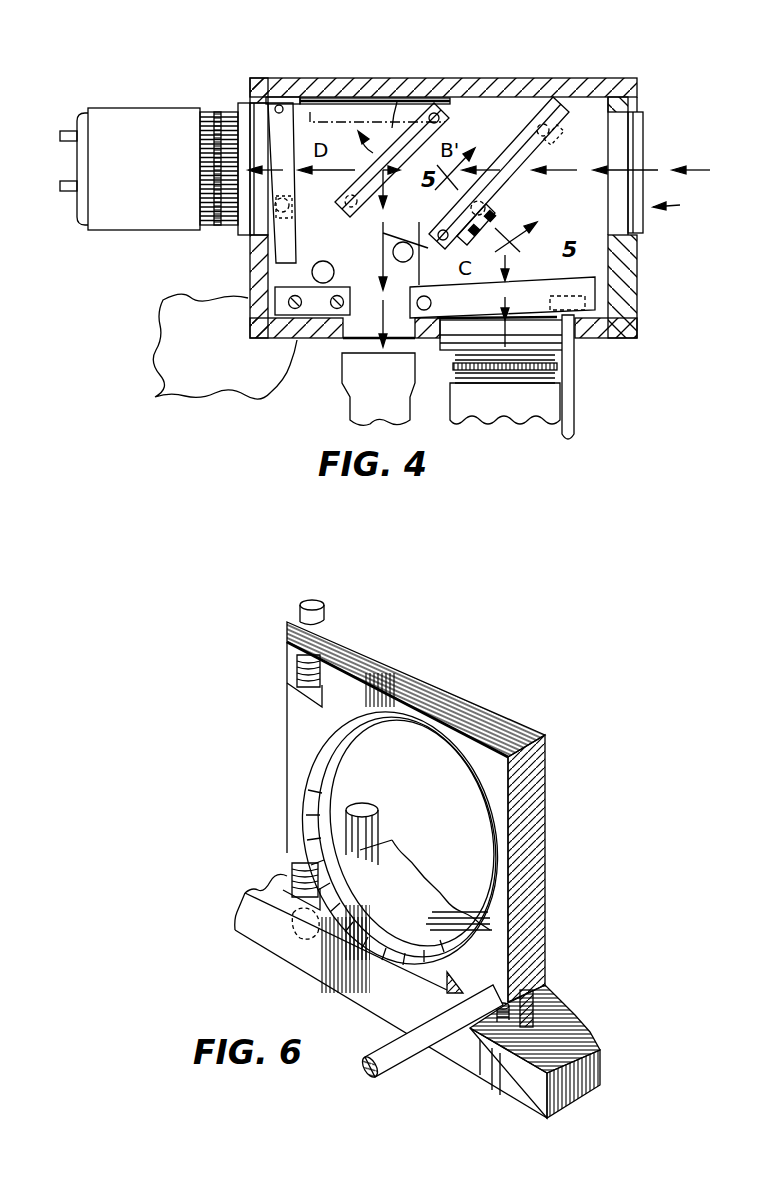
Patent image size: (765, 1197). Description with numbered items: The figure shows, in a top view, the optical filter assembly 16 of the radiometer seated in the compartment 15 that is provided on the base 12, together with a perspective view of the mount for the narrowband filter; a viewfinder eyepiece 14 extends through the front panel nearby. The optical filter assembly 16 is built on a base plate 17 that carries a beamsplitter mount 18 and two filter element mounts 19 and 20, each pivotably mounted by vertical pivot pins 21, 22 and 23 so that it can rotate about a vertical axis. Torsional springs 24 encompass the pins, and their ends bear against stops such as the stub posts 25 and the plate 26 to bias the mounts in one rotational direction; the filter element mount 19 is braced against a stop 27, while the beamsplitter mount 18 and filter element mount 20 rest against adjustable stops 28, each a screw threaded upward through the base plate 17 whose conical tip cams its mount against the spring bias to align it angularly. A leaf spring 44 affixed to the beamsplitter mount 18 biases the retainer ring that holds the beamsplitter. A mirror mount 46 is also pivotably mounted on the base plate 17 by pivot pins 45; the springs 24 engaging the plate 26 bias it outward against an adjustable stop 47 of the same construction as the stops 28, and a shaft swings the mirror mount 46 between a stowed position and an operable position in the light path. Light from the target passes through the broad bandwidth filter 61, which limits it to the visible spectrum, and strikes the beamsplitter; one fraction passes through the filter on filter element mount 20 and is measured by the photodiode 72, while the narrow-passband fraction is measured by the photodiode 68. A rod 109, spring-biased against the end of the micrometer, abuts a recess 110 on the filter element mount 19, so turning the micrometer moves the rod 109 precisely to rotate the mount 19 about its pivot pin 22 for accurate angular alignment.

In FIG. 4, the base 12 is at (221, 361).
In FIG. 4, the viewfinder eyepiece 14 is at (342, 372).
In FIG. 4, the compartment 15 is at (500, 78).
In FIG. 4, the optical filter assembly 16 is at (681, 204).
In FIG. 4, the base plate 17 is at (583, 216).
In FIG. 6, the base plate 17 is at (490, 1072).
In FIG. 4, the beamsplitter mount 18 is at (556, 101).
In FIG. 4, the filter element mount 19 is at (545, 285).
In FIG. 6, the filter element mount 19 is at (537, 790).
In FIG. 4, the filter element mount 20 is at (287, 243).
In FIG. 4, the vertical pivot pin 21 is at (458, 238).
In FIG. 4, the vertical pivot pin 22 is at (417, 303).
In FIG. 6, the vertical pivot pin 22 is at (311, 598).
In FIG. 4, the vertical pivot pin 23 is at (273, 98).
In FIG. 4, the torsional spring 24 is at (290, 102).
In FIG. 6, the torsional spring 24 is at (293, 667).
In FIG. 4, the stub post 25 is at (393, 258).
In FIG. 4, the plate 26 is at (397, 102).
In FIG. 4, the stop 27 is at (583, 296).
In FIG. 6, the stop 27 is at (483, 1032).
In FIG. 4, the adjustable stop 28 is at (283, 205).
In FIG. 4, the leaf spring 44 is at (448, 203).
In FIG. 4, the pivot pin 45 is at (445, 118).
In FIG. 4, the mirror mount 46 is at (395, 98).
In FIG. 4, the adjustable stop 47 is at (357, 210).
In FIG. 4, the broad bandwidth filter 61 is at (647, 140).
In FIG. 4, the photodiode 68 is at (548, 402).
In FIG. 4, the photodiode 72 is at (135, 130).
In FIG. 4, the rod 109 is at (575, 352).
In FIG. 6, the rod 109 is at (388, 1043).
In FIG. 6, the recess 110 is at (518, 1012).